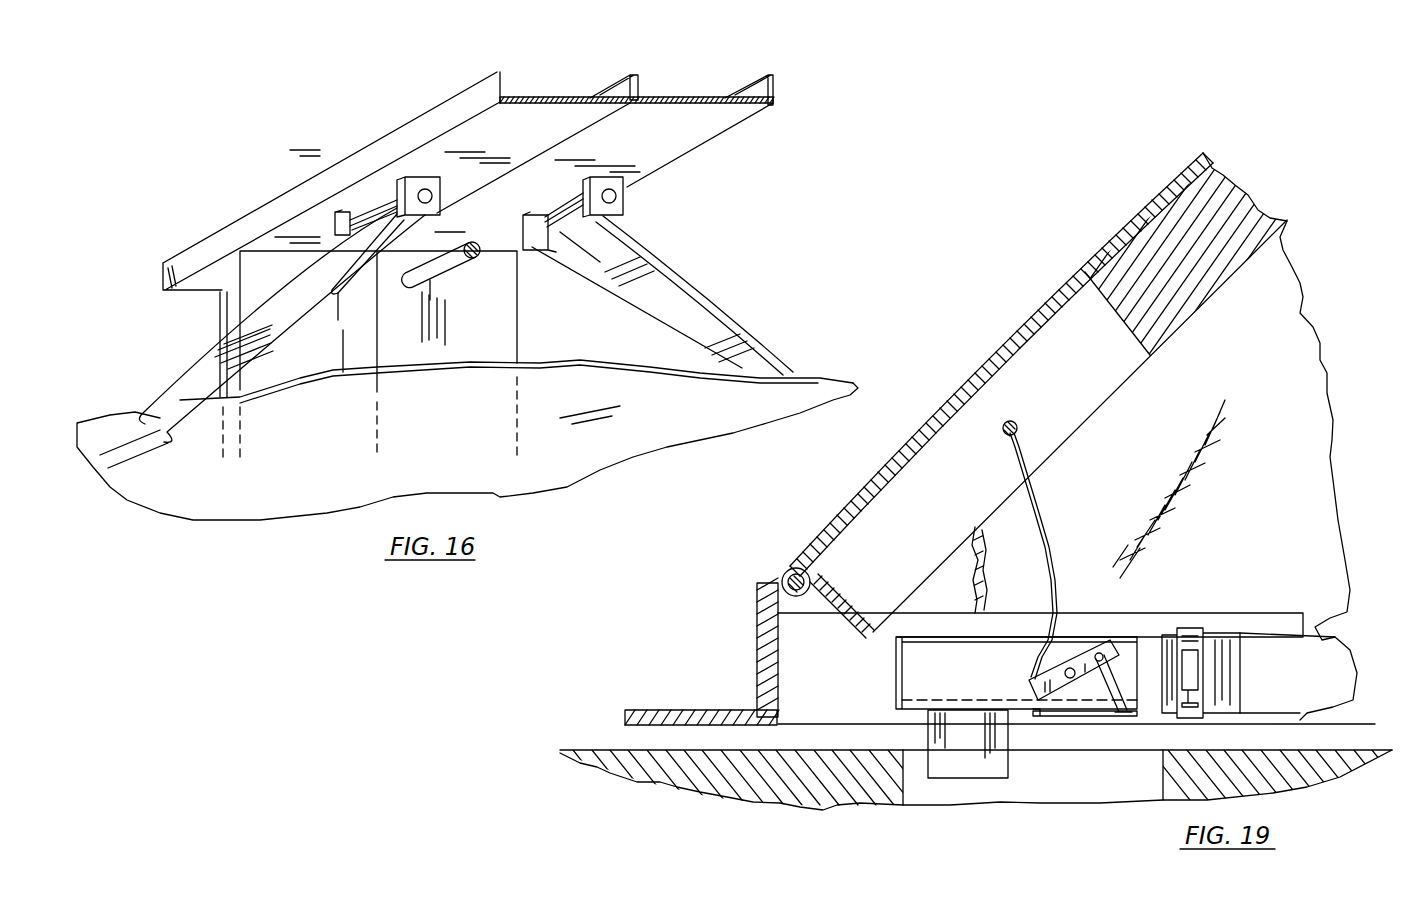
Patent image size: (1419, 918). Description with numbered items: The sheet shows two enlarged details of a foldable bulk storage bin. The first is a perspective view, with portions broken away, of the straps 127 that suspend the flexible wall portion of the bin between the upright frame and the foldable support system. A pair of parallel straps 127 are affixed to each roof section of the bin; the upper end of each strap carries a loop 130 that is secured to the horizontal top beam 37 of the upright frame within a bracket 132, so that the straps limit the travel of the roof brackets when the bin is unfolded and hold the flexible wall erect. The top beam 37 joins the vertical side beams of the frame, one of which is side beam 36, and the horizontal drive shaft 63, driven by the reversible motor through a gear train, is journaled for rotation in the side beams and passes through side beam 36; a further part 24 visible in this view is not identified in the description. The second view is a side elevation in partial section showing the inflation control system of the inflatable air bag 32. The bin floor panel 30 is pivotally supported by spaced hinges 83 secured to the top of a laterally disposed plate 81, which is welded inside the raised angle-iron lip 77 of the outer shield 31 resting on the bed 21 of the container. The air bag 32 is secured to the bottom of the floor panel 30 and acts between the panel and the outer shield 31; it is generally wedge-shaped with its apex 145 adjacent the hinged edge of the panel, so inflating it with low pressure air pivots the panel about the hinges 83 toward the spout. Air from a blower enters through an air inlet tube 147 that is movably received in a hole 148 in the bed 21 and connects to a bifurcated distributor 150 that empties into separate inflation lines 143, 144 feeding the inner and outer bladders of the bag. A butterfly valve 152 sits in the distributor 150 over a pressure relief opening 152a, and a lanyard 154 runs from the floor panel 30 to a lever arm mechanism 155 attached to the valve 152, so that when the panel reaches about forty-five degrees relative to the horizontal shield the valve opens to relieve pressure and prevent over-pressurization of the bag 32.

In FIG. 16, the top beam 37 is at (727, 125).
In FIG. 16, the bracket 132 is at (623, 197).
In FIG. 16, the loop 130 is at (380, 203).
In FIG. 16, the straps 127 is at (211, 348).
In FIG. 16, the drive shaft 63 is at (458, 268).
In FIG. 16, the side beam 36 is at (508, 337).
In FIG. 16, the skin 24 is at (820, 380).
In FIG. 19, the bin floor panel 30 is at (1123, 228).
In FIG. 19, the inflatable air bag 32 is at (1327, 367).
In FIG. 19, the apex 145 is at (965, 573).
In FIG. 19, the hinges 83 is at (788, 572).
In FIG. 19, the plate 81 is at (757, 648).
In FIG. 19, the raised lip 77 is at (1215, 612).
In FIG. 19, the bifurcated distributor 150 is at (895, 685).
In FIG. 19, the air inlet tube 147 is at (1000, 768).
In FIG. 19, the outer shield 31 is at (1368, 722).
In FIG. 19, the bed 21 is at (1372, 750).
In FIG. 19, the hole 148 is at (1163, 777).
In FIG. 19, the lanyard 154 is at (1040, 517).
In FIG. 19, the lever arm mechanism 155 is at (1072, 650).
In FIG. 19, the pressure relief opening 152a is at (1100, 703).
In FIG. 19, the butterfly valve 152 is at (1067, 715).
In FIG. 19, the inflation line 143 is at (1312, 650).
In FIG. 19, the inflation line 144 is at (1329, 651).